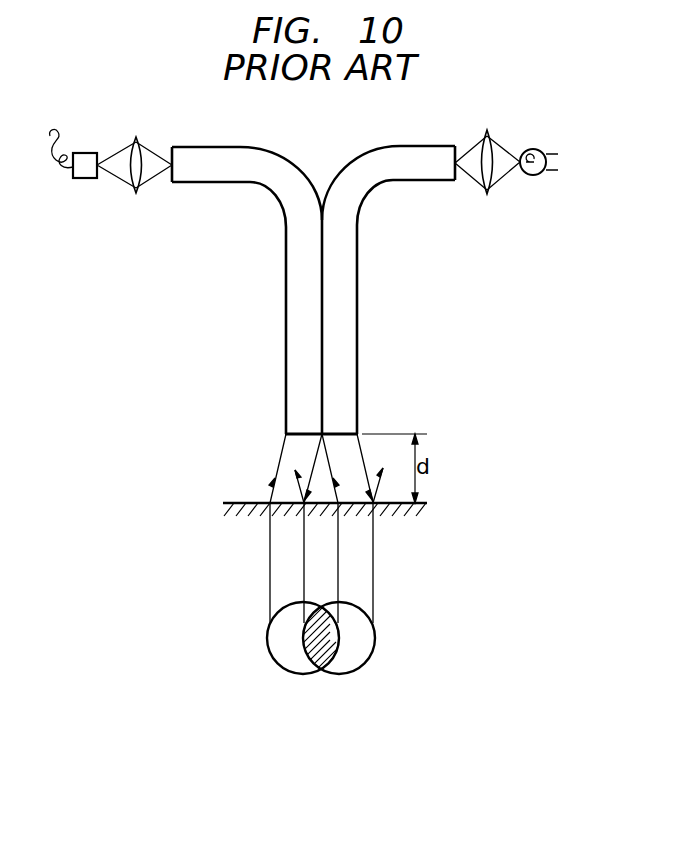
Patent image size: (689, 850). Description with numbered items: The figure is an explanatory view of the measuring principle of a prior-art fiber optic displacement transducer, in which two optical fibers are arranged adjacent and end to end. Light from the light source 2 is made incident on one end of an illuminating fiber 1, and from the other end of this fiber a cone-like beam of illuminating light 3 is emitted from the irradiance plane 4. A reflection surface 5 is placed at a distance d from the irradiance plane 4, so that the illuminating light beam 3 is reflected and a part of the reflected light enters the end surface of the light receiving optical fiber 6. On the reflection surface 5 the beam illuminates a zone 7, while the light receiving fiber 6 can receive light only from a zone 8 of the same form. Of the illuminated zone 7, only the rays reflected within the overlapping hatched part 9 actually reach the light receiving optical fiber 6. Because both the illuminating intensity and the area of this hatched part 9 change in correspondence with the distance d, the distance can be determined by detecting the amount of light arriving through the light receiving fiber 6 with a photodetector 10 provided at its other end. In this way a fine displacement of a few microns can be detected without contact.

The photodetector 10 is at (88, 153).
The light source 2 is at (529, 149).
The light receiving optical fiber 6 is at (286, 318).
The illuminating fiber 1 is at (357, 318).
The irradiance plane 4 is at (338, 434).
The illuminating light beam 3 is at (360, 450).
The reflection surface 5 is at (248, 502).
The light receiving zone 8 is at (297, 675).
The hatched part 9 is at (330, 675).
The illuminated zone 7 is at (356, 675).